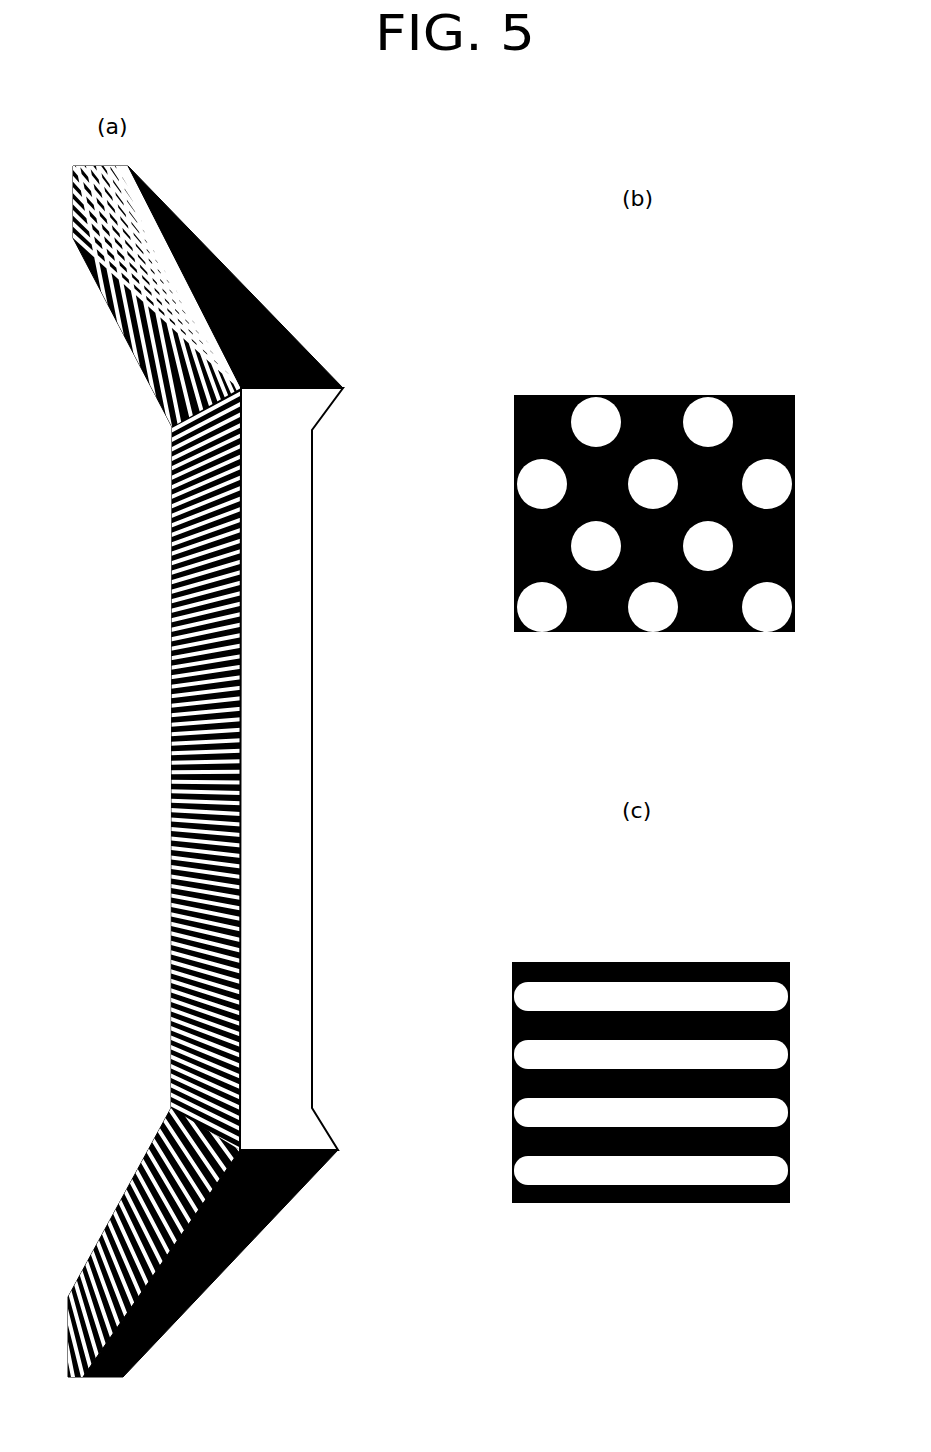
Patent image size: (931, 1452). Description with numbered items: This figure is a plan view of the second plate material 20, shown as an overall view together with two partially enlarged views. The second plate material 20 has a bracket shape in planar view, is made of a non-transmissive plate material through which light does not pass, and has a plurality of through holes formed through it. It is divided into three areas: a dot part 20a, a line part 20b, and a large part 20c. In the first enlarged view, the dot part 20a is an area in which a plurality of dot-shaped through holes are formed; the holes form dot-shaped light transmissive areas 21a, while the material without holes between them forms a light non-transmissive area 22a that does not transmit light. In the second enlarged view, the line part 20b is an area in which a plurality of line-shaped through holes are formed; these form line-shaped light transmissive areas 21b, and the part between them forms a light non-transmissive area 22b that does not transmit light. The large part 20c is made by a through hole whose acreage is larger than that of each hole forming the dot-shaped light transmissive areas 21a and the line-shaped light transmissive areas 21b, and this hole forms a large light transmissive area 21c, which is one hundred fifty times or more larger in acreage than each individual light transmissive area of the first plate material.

The second plate material 20 is at (446, 726).
The dot part 20a is at (231, 290).
The line part 20b is at (164, 546).
The large part 20c is at (302, 612).
The dot-shaped light transmissive areas 21a is at (560, 470).
The line-shaped light transmissive areas 21b is at (687, 1040).
The large light transmissive area 21c is at (313, 775).
The light non-transmissive area 22a is at (768, 532).
The light non-transmissive area 22b is at (528, 1200).